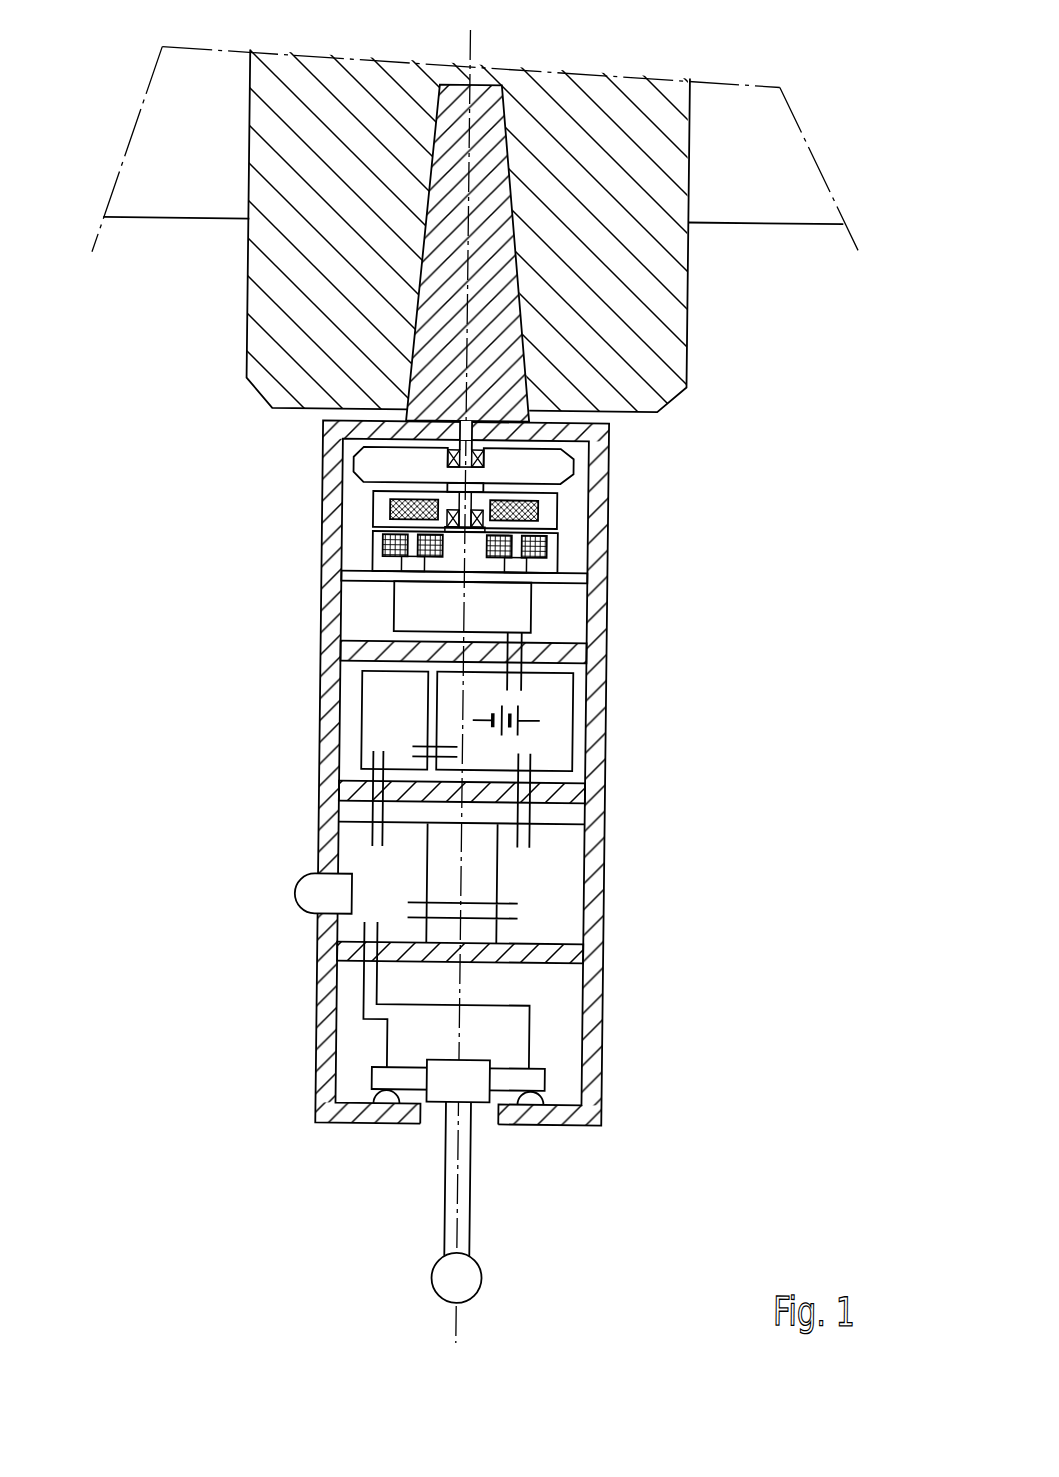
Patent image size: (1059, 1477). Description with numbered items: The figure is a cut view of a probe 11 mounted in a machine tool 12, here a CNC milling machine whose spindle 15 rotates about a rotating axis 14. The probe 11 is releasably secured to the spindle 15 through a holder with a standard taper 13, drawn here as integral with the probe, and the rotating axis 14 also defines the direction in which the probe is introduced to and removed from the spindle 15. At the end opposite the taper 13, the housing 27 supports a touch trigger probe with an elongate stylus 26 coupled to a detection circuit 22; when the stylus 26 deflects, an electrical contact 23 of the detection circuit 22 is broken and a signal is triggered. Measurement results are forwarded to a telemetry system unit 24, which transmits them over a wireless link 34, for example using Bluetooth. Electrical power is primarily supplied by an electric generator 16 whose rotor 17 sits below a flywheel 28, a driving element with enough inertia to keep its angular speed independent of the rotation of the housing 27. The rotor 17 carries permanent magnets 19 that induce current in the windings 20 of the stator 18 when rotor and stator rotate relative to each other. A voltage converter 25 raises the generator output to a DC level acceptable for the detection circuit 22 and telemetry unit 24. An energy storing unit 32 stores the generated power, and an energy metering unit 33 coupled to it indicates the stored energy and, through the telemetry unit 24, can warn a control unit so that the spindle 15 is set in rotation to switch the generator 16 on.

The probe 11 is at (529, 738).
The machine tool 12 is at (206, 290).
The taper 13 is at (485, 328).
The rotating axis 14 is at (470, 292).
The spindle 15 is at (314, 322).
The electric generator 16 is at (627, 531).
The rotor 17 is at (380, 506).
The stator 18 is at (459, 571).
The permanent magnets 19 is at (387, 513).
The windings 20 is at (545, 548).
The detection circuit 22 is at (393, 1038).
The electrical contact 23 is at (390, 1101).
The telemetry system unit 24 is at (556, 892).
The voltage converter 25 is at (508, 602).
The stylus 26 is at (474, 1278).
The housing 27 is at (598, 1102).
The flywheel 28 is at (556, 467).
The energy storing unit 32 is at (550, 727).
The energy metering unit 33 is at (385, 731).
The wireless link 34 is at (299, 895).